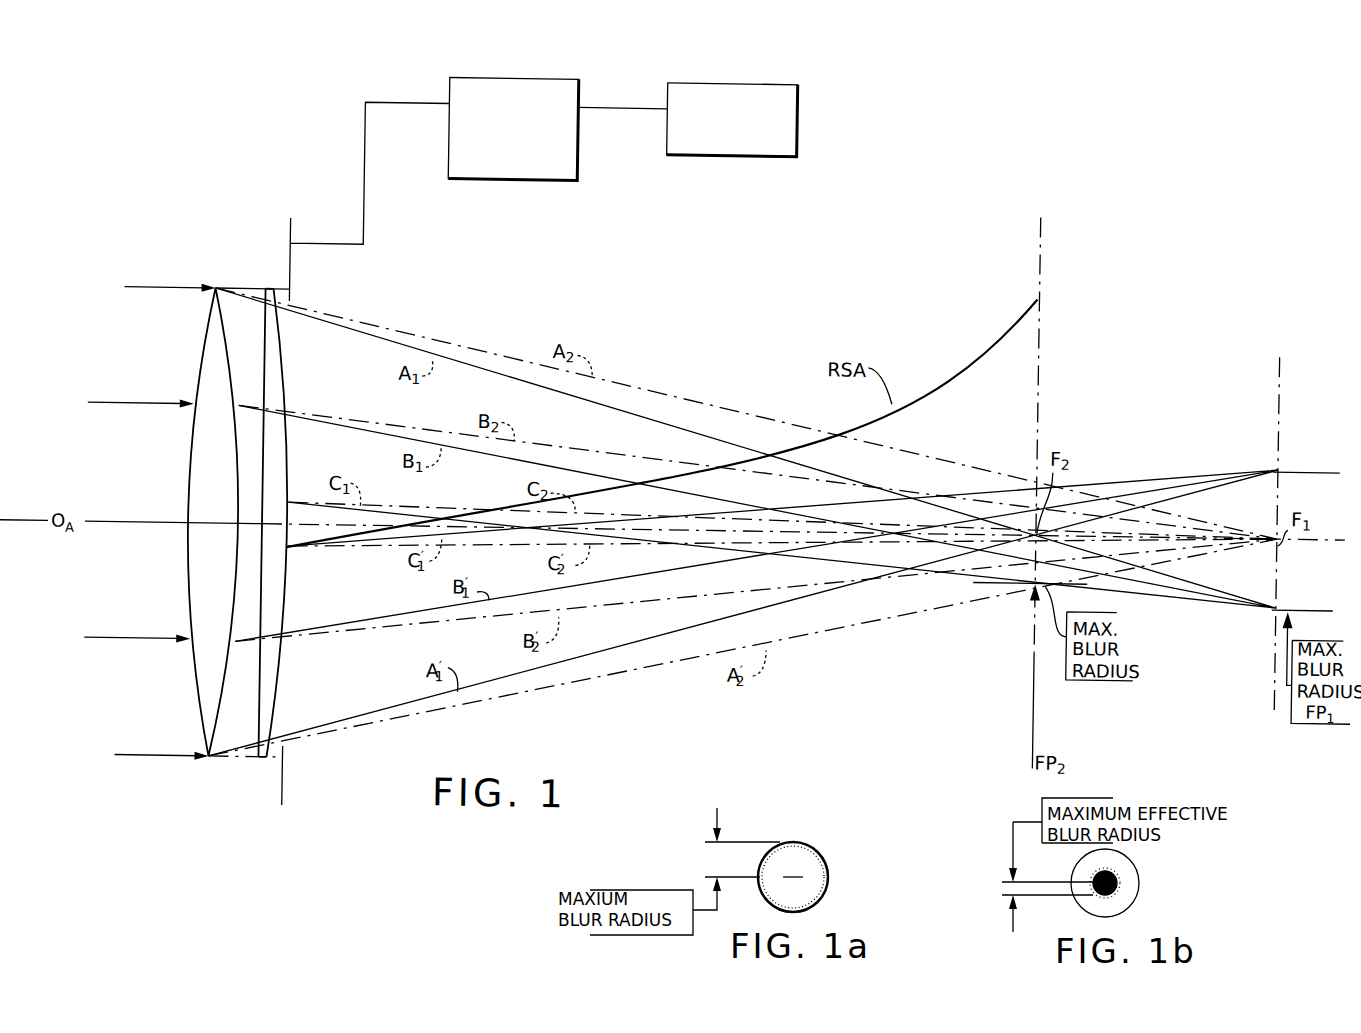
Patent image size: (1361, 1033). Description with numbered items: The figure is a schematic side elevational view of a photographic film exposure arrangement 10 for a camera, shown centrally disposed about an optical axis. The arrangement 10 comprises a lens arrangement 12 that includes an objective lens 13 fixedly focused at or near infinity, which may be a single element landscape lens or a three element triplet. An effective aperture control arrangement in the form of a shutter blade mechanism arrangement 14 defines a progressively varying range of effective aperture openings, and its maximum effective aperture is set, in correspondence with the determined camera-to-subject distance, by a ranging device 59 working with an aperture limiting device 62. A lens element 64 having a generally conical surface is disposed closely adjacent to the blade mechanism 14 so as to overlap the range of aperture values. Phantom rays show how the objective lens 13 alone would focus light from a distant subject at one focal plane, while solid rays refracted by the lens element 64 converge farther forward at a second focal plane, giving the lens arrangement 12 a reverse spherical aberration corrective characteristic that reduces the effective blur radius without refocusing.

The photographic film exposure arrangement 10 is at (808, 102).
The lens arrangement 12 is at (256, 484).
The objective lens 13 is at (195, 366).
The shutter blade mechanism arrangement 14 is at (280, 234).
The ranging device 59 is at (743, 76).
The aperture limiting device 62 is at (515, 176).
The lens element 64 is at (294, 575).